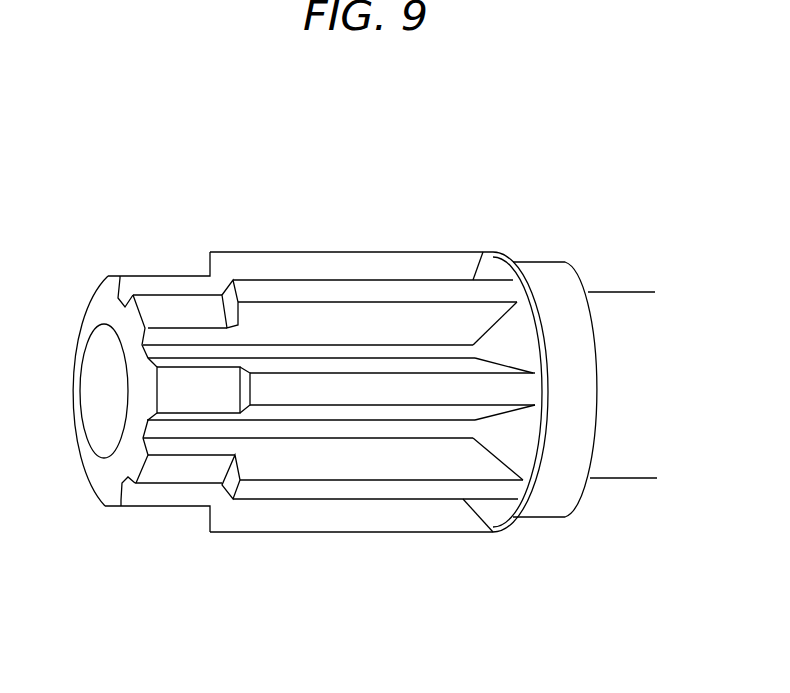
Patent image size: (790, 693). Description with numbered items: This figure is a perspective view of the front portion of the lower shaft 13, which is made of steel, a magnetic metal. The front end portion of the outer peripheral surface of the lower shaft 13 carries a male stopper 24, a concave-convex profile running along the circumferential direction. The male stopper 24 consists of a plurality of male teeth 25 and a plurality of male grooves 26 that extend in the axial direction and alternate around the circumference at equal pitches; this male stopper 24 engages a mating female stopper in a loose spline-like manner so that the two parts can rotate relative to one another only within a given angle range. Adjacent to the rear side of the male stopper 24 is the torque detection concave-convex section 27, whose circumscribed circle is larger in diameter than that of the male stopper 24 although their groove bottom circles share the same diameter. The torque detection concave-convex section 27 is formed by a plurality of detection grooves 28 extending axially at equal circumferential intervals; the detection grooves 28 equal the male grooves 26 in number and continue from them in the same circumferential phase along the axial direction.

The lower shaft 13 is at (617, 315).
The male stopper 24 is at (167, 312).
The male teeth 25 is at (221, 398).
The male grooves 26 is at (192, 350).
The torque detection concave-convex section 27 is at (357, 293).
The detection grooves 28 is at (413, 350).